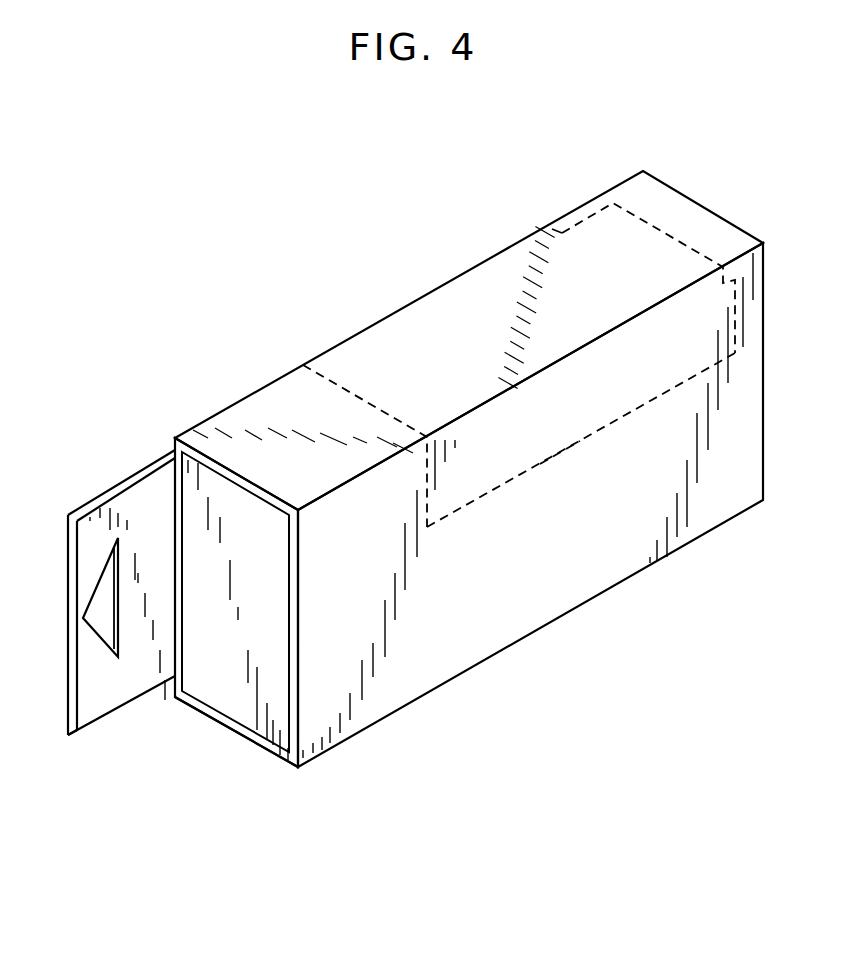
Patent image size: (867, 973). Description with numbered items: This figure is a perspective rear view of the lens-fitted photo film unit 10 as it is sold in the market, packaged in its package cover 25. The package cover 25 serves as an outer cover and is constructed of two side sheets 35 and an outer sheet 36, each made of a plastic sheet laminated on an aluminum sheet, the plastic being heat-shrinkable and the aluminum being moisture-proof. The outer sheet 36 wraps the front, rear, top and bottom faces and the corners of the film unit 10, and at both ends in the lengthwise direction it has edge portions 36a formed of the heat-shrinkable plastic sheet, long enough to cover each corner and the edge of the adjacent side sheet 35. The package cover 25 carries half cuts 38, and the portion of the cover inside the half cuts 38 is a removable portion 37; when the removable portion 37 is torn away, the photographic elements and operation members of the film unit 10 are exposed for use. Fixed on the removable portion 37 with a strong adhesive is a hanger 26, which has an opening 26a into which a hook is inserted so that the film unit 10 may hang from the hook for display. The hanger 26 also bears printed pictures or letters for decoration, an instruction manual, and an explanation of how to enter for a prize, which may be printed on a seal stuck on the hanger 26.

The film unit 10 is at (462, 250).
The package cover 25 is at (297, 387).
The hanger 26 is at (121, 594).
The opening 26a is at (103, 620).
The side sheet 35 is at (268, 623).
The outer sheet 36 is at (272, 590).
The edge portion 36a is at (242, 737).
The removable portion 37 is at (630, 398).
The half cuts 38 is at (557, 455).